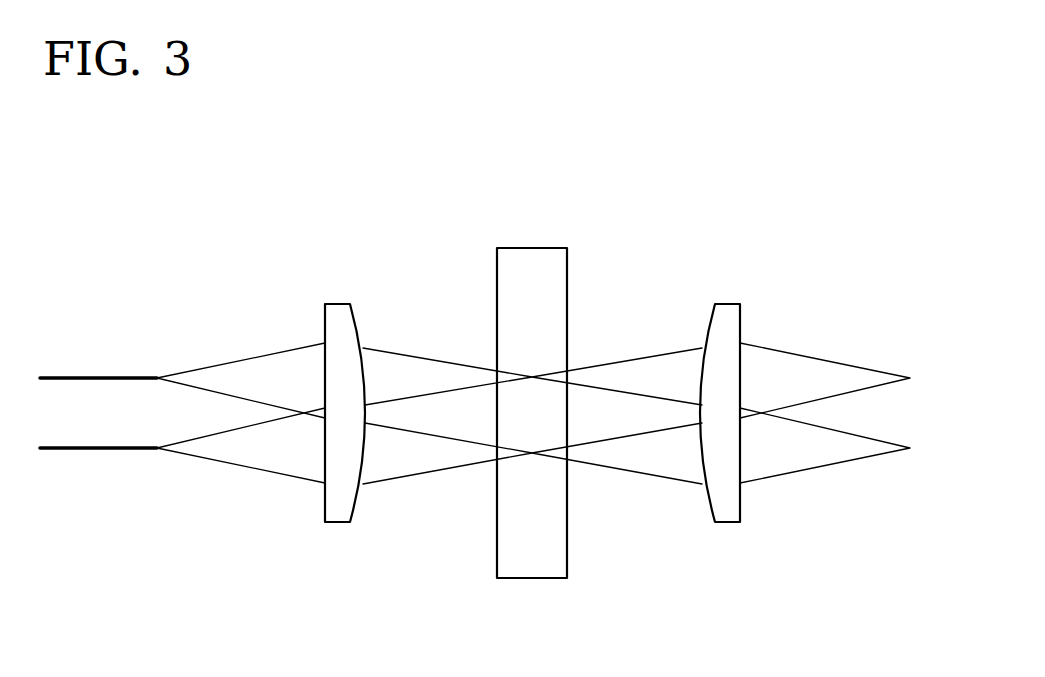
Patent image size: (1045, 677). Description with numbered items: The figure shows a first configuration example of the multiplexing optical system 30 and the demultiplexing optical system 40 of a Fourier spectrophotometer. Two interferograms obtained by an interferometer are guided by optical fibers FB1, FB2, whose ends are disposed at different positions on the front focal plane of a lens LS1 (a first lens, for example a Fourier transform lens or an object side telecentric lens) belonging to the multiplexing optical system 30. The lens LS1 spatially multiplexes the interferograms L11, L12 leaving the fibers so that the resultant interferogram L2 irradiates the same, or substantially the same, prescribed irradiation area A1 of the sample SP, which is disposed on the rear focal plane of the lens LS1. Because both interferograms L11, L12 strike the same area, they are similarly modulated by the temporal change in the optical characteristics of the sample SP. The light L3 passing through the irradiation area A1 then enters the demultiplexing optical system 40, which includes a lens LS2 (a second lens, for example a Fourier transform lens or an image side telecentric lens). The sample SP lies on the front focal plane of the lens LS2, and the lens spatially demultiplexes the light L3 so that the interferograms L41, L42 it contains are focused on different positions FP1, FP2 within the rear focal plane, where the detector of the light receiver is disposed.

The optical fiber FB1 is at (96, 376).
The optical fiber FB2 is at (90, 453).
The interferogram L11 is at (245, 370).
The interferogram L12 is at (248, 453).
The lens LS1 is at (343, 302).
The multiplexing optical system 30 is at (354, 197).
The interferogram L2 is at (458, 410).
The light L3 is at (610, 410).
The sample SP is at (522, 247).
The irradiation area A1 is at (483, 426).
The lens LS2 is at (727, 302).
The demultiplexing optical system 40 is at (735, 197).
The interferogram L41 is at (826, 371).
The interferogram L42 is at (828, 453).
The position FP1 is at (912, 376).
The position FP2 is at (910, 451).